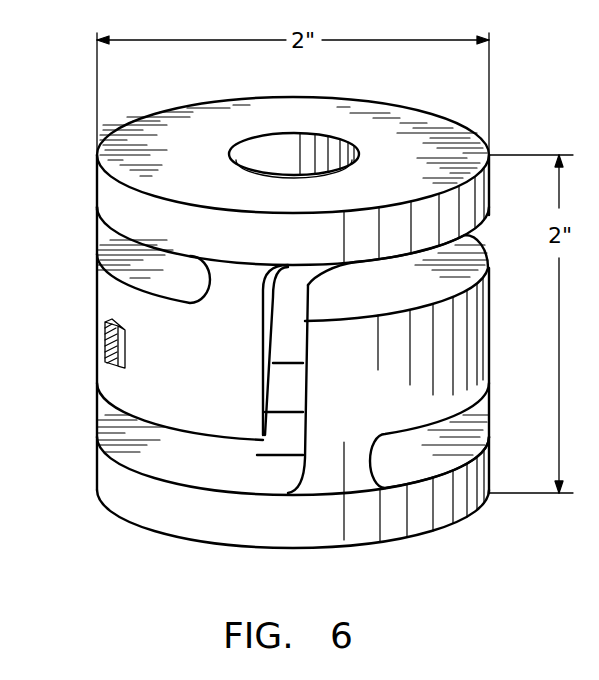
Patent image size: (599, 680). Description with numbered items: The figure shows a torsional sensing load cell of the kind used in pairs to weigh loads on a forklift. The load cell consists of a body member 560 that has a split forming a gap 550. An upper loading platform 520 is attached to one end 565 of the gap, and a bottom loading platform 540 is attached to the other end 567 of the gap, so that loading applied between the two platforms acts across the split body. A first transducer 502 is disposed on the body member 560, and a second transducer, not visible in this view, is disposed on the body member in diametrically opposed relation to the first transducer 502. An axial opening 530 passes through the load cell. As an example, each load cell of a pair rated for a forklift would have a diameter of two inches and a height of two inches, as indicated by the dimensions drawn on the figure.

The first transducer 502 is at (103, 333).
The upper loading platform 520 is at (493, 190).
The axial opening 530 is at (277, 152).
The bottom loading platform 540 is at (493, 480).
The gap 550 is at (284, 387).
The body member 560 is at (493, 323).
The one end of the gap 565 is at (213, 357).
The other end of the gap 567 is at (335, 382).